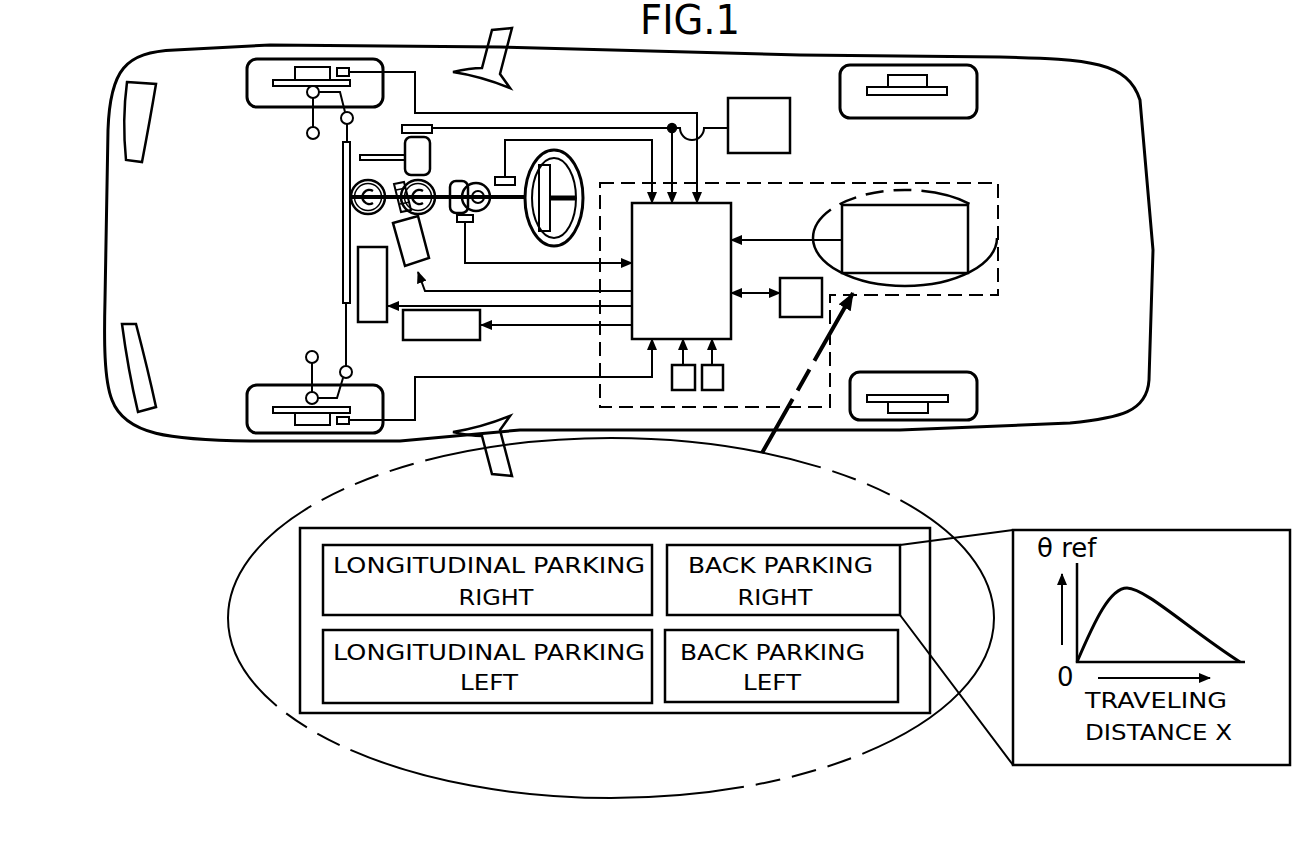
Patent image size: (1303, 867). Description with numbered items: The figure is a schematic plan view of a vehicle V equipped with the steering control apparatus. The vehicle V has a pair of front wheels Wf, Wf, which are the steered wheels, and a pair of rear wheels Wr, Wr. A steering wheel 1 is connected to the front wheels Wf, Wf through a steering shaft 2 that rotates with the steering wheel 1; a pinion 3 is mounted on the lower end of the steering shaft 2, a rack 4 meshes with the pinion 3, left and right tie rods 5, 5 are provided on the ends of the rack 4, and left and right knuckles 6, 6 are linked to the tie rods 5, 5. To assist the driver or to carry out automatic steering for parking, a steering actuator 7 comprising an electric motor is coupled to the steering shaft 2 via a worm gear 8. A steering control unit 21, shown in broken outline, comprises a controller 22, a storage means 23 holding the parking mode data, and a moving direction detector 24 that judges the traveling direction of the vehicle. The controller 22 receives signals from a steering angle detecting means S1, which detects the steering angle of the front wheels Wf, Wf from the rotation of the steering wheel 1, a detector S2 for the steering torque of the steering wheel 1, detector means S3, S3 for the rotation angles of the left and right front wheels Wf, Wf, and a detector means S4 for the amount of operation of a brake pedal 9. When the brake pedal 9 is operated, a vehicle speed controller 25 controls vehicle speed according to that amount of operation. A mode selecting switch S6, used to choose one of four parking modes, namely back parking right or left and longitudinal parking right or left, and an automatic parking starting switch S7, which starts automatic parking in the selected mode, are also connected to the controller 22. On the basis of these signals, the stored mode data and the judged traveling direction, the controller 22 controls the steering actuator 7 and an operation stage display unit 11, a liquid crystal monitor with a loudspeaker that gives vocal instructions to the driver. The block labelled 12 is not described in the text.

The steering wheel 1 is at (591, 168).
The steering shaft 2 is at (498, 205).
The pinion 3 is at (360, 183).
The rack 4 is at (345, 248).
The tie rod 5 is at (350, 113).
The knuckle 6 is at (328, 98).
The steering actuator 7 is at (512, 253).
The worm gear 8 is at (392, 212).
The brake pedal 9 is at (430, 158).
The operation stage display unit 11 is at (381, 293).
The automatic parking start switch 12 is at (457, 340).
The steering control unit 21 is at (1000, 218).
The controller 22 is at (694, 289).
The storage means 23 is at (913, 257).
The moving direction detector 24 is at (812, 315).
The vehicle speed controller 25 is at (773, 144).
The steering angle detecting means S1 is at (495, 178).
The steering torque detector S2 is at (462, 222).
The front wheel rotation angle detector means S3 is at (346, 68).
The brake pedal operating amount detecting means S4 is at (402, 130).
The mode selecting switch S6 is at (678, 384).
The automatic parking starting switch S7 is at (710, 382).
The front wheel Wf is at (253, 108).
The rear wheel Wr is at (977, 93).
The vehicle V is at (214, 445).